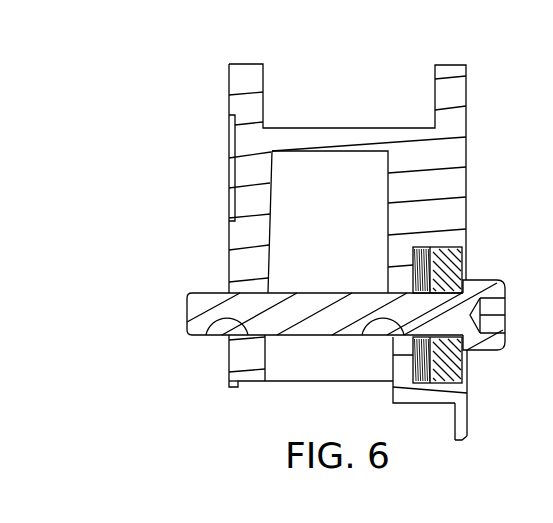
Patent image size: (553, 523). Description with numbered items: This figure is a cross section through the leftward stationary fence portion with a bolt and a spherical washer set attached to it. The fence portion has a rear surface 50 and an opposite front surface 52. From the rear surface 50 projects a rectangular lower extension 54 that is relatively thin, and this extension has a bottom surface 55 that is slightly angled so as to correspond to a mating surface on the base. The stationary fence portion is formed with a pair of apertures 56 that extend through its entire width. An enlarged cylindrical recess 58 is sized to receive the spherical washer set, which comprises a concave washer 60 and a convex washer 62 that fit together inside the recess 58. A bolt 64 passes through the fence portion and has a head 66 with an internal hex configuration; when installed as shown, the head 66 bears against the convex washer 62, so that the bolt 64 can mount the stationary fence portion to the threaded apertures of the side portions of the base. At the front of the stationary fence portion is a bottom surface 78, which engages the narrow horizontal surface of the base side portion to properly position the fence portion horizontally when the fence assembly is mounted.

The rear surface 50 is at (466, 183).
The front surface 52 is at (228, 242).
The rectangular lower extension 54 is at (462, 428).
The bottom surface 55 is at (462, 443).
The apertures 56 is at (214, 330).
The enlarged cylindrical recess 58 is at (462, 252).
The concave washer 60 is at (428, 345).
The convex washer 62 is at (450, 270).
The bolt 64 is at (320, 323).
The head 66 is at (490, 347).
The bottom surface 78 is at (228, 384).